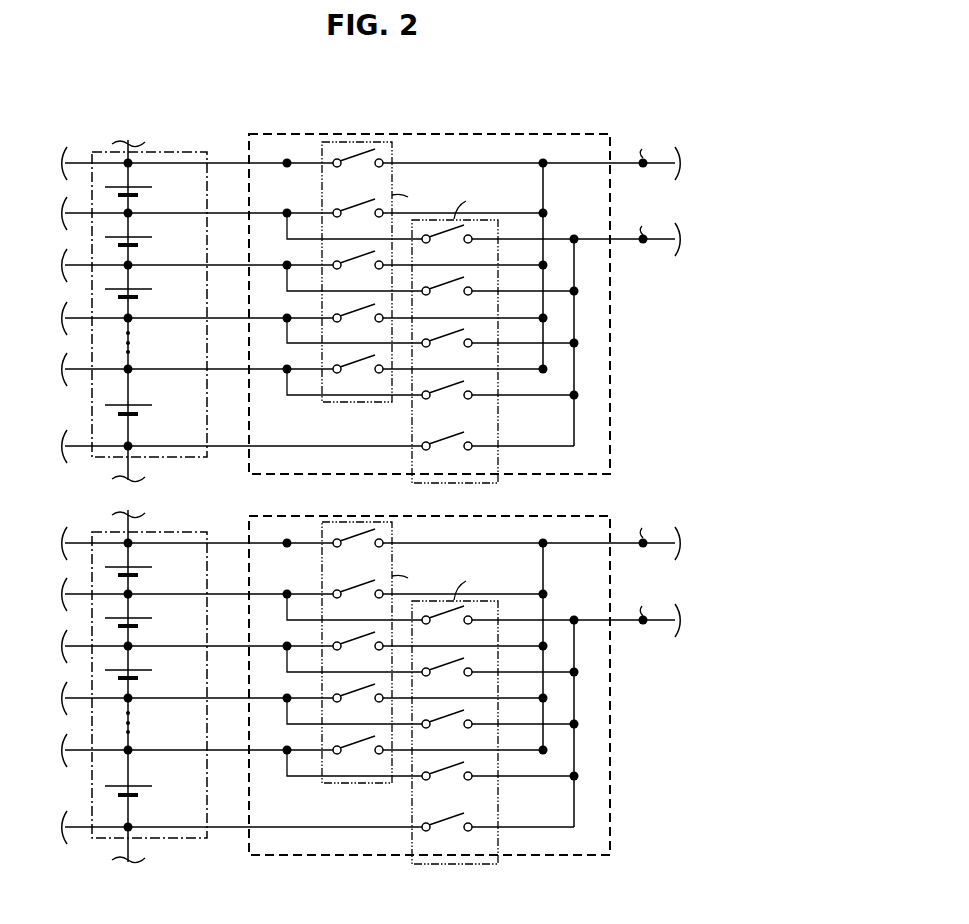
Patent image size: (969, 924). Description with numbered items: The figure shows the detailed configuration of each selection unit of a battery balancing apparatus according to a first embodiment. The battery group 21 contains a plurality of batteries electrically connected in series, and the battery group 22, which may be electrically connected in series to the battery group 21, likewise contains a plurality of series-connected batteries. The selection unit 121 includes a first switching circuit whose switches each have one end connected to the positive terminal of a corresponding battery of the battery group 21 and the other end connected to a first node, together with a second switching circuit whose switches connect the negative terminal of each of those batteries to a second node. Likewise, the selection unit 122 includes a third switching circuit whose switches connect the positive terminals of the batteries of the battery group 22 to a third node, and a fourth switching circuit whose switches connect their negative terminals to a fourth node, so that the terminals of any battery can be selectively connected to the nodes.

The battery group 22 is at (188, 150).
The selection unit 122 is at (569, 133).
The battery group 21 is at (188, 840).
The selection unit 121 is at (568, 857).